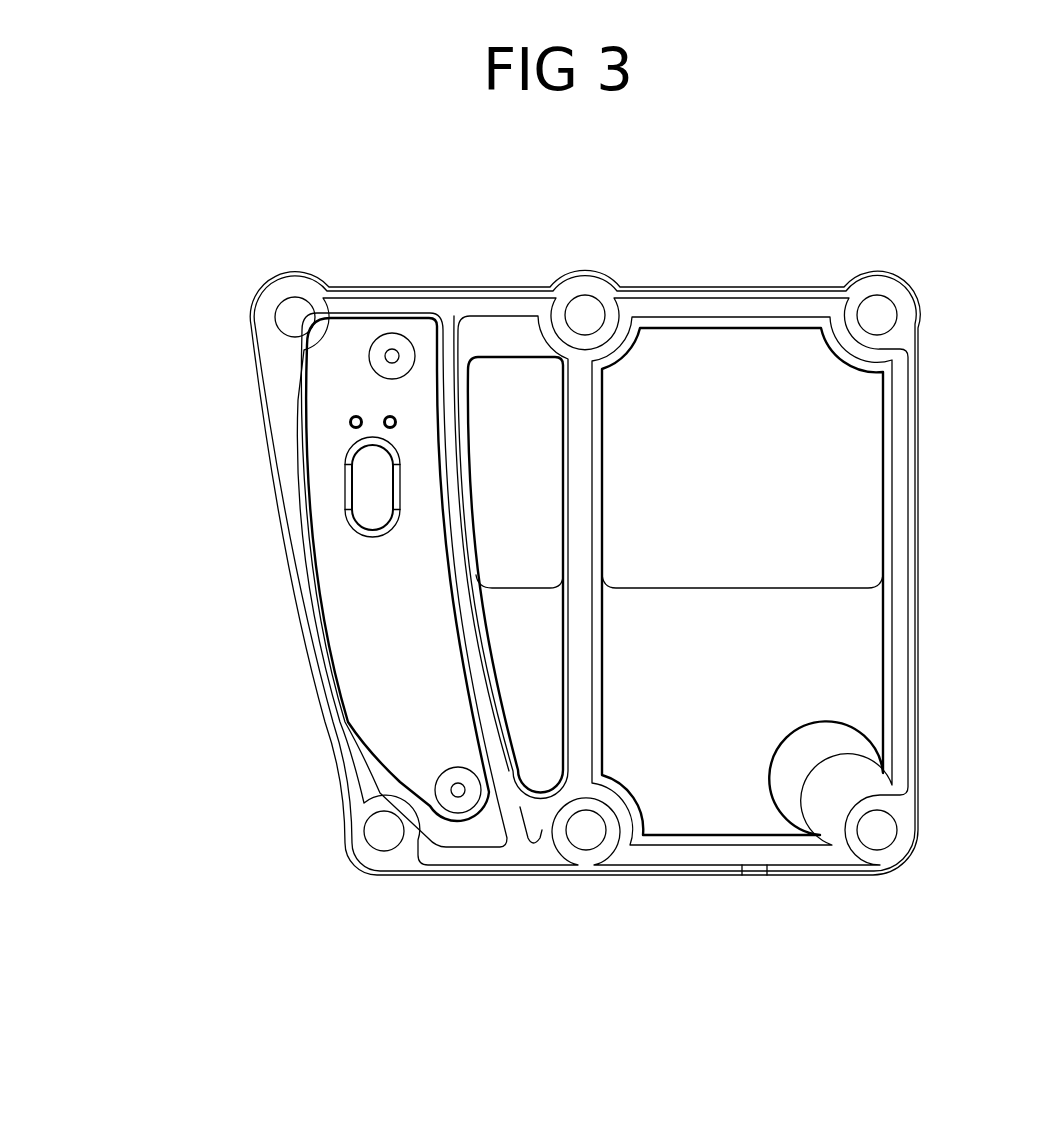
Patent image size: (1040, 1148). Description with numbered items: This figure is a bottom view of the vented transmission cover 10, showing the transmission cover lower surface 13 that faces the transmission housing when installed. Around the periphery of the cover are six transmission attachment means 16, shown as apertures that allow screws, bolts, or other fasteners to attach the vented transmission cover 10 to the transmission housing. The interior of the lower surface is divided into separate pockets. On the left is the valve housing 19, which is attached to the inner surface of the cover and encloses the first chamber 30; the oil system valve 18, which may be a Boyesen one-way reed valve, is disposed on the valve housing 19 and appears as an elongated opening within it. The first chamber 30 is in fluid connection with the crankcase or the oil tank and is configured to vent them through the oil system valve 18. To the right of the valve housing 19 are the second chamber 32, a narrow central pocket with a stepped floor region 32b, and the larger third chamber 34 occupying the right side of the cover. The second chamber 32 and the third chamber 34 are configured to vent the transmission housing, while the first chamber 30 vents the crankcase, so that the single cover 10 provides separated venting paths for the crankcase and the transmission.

The vented transmission cover 10 is at (585, 543).
The transmission cover lower surface 13 is at (920, 304).
The transmission attachment means 16 is at (281, 303).
The oil system valve 18 is at (350, 515).
The valve housing 19 is at (388, 637).
The first chamber 30 is at (348, 577).
The second chamber 32 is at (555, 642).
The step of second recess 32b is at (513, 657).
The third chamber 34 is at (728, 685).